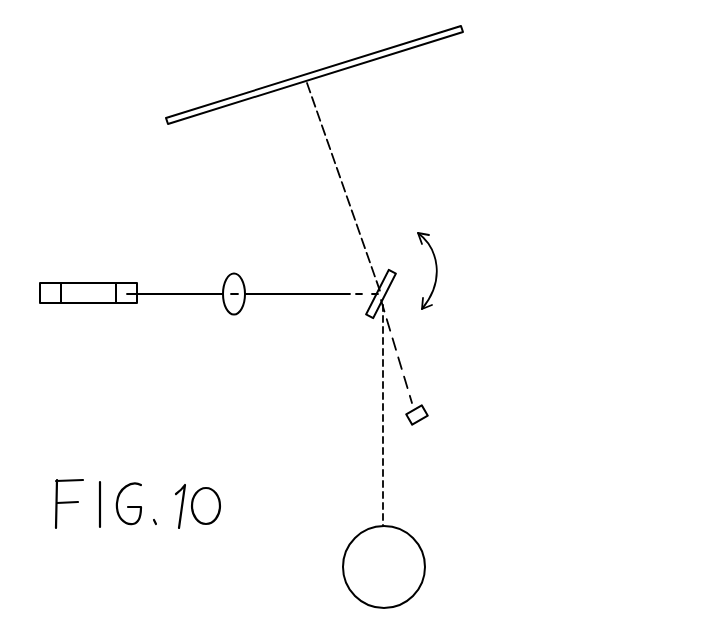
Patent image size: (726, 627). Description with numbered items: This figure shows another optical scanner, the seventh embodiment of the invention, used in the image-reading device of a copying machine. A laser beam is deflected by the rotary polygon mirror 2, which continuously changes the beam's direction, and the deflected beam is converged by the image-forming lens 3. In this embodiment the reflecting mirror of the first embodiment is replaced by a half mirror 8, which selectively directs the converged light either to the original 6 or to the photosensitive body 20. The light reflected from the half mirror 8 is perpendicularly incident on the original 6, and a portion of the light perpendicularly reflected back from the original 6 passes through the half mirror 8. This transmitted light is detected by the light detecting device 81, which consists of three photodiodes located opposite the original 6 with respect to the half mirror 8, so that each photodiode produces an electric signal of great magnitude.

The rotary polygon mirror 2 is at (88, 303).
The image-forming lens 3 is at (232, 315).
The original 6 is at (448, 37).
The half mirror 8 is at (368, 317).
The light detecting device 81 is at (427, 412).
The photosensitive body 20 is at (426, 560).